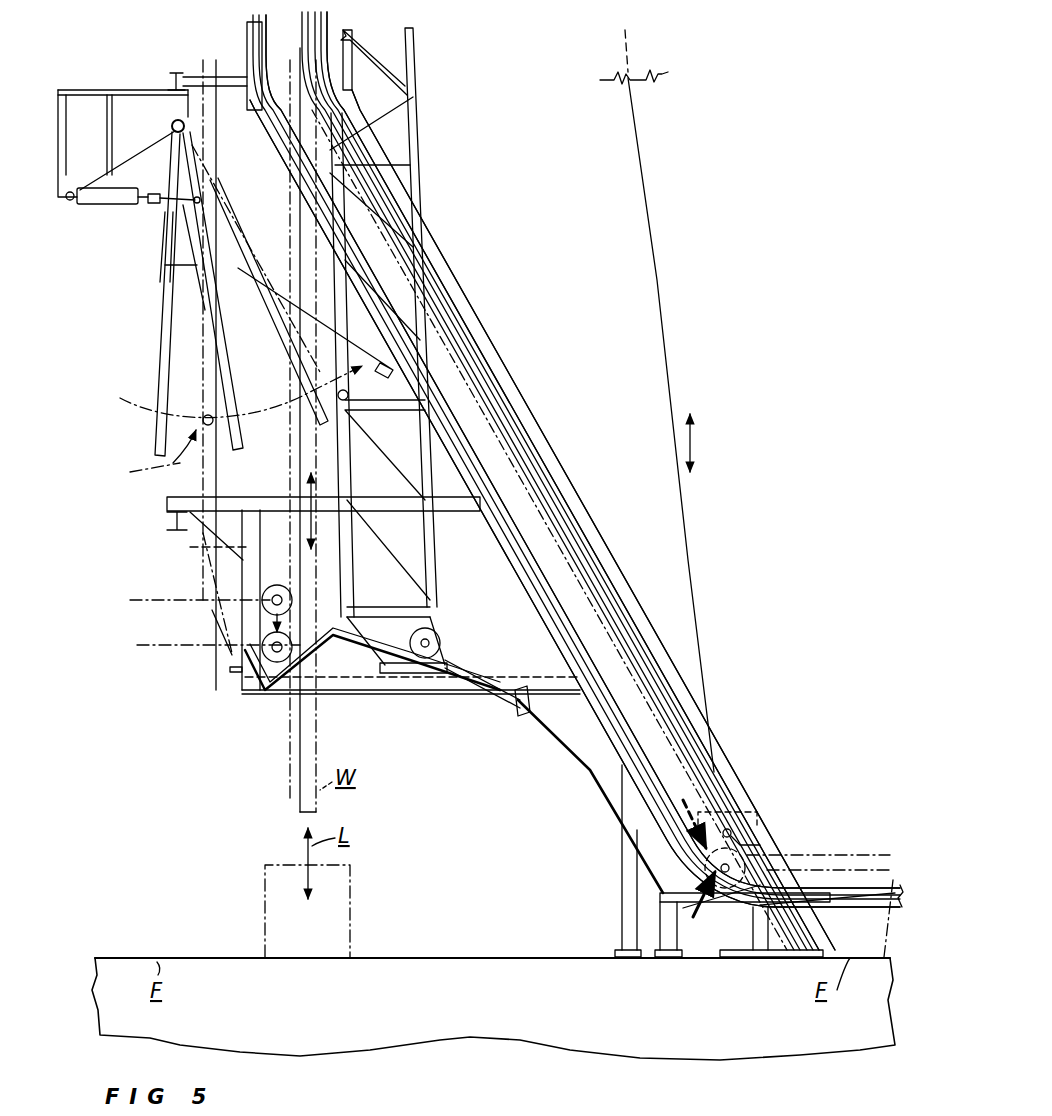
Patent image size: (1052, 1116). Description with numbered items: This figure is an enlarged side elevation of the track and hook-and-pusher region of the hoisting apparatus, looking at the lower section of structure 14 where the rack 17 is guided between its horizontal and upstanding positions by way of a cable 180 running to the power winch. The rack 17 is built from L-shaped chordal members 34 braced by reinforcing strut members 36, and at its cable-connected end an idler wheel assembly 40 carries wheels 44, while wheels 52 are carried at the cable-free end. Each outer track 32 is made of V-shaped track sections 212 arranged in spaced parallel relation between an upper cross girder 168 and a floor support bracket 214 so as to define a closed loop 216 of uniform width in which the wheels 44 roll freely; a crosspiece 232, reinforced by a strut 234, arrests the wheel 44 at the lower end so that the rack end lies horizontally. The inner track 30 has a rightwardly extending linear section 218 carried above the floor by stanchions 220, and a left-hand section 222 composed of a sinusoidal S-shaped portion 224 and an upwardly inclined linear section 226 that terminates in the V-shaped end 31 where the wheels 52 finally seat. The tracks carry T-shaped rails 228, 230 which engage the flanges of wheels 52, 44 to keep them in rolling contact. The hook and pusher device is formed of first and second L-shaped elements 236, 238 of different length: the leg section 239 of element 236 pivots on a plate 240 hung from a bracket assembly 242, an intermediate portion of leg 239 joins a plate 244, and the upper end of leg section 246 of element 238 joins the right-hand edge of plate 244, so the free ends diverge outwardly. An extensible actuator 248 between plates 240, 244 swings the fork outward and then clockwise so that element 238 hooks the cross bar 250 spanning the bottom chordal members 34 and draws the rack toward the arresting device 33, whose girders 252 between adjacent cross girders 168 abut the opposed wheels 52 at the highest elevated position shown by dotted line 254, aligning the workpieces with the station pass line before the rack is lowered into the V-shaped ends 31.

The structure 14 is at (290, 695).
The rack 17 is at (420, 80).
The inner pair of tracks 30 is at (823, 883).
The V-shaped ends of inner tracks 31 is at (248, 693).
The outer pair of tracks 32 is at (528, 430).
The rack arresting device 33 is at (240, 562).
The L-shaped chordal members 34 is at (385, 660).
The reinforcing strut members 36 is at (378, 560).
The idler wheel assembly 40 is at (702, 832).
The wheels 44 is at (696, 908).
The wheels 52 is at (262, 630).
The cross girders 168 is at (182, 72).
The hoist cable 180 is at (653, 260).
The track sections 212 is at (527, 448).
The floor support bracket 214 is at (764, 958).
The closed V-shaped loop 216 is at (523, 493).
The elongated linear sections 218 is at (818, 912).
The stanchions 220 is at (667, 950).
The left-hand section of inner track 222 is at (553, 737).
The sinusoidal S-shaped portion 224 is at (605, 770).
The inclined linear section 226 is at (473, 687).
The T-shaped rails 228 is at (627, 795).
The T-shaped rails 230 is at (577, 647).
The crosspiece 232 is at (740, 843).
The strut 234 is at (755, 930).
The first L-shaped element 236 is at (157, 345).
The second L-shaped element 238 is at (247, 363).
The leg section 239 is at (165, 280).
The plate 240 is at (80, 103).
The bracket assembly 242 is at (98, 90).
The plate 244 is at (165, 217).
The leg section 246 is at (260, 278).
The extensible actuator 248 is at (98, 197).
The cross bar 250 is at (353, 437).
The girders 252 is at (201, 593).
The dotted line 254 is at (194, 616).